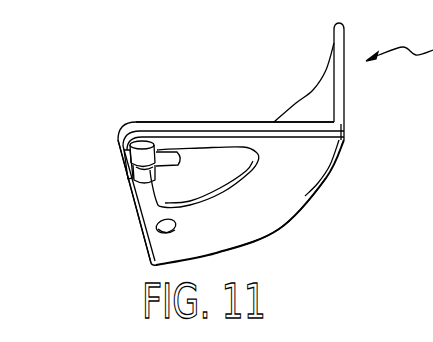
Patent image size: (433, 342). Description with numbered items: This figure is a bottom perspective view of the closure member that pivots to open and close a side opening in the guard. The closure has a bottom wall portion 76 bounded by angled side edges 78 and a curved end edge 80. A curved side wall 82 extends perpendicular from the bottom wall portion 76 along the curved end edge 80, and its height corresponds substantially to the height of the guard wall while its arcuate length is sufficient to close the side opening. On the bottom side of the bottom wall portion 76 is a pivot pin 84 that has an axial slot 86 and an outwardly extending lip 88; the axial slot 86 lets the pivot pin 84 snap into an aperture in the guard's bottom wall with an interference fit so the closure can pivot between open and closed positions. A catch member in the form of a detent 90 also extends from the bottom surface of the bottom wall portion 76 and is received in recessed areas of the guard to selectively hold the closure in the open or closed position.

The bottom wall portion 76 is at (300, 168).
The angled side edges 78 is at (241, 121).
The curved end edge 80 is at (279, 229).
The curved side wall 82 is at (321, 95).
The pivot pin 84 is at (147, 142).
The axial slot 86 is at (127, 168).
The outwardly extending lip 88 is at (181, 151).
The detent 90 is at (164, 232).